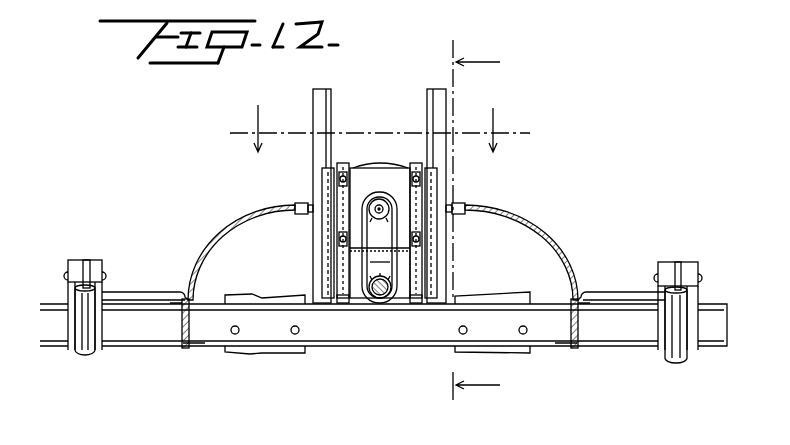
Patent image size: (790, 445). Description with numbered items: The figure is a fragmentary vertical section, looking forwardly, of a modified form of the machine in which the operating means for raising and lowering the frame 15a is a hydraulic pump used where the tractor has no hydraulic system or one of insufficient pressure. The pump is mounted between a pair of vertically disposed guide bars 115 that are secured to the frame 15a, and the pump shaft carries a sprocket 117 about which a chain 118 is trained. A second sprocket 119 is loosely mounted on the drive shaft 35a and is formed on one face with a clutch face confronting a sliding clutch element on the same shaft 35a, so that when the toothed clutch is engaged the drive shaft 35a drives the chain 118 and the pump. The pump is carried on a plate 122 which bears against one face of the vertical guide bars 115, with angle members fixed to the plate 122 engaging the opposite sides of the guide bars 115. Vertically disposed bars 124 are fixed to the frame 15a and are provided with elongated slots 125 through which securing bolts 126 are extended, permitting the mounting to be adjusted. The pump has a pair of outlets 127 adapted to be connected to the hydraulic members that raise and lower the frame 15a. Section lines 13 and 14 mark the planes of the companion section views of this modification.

The section line 13- 13 is at (487, 220).
The section line 14- 14 is at (380, 115).
The frame 15a is at (322, 331).
The drive shaft 35a is at (385, 303).
The guide bars 115 is at (320, 142).
The sprocket 117 is at (372, 193).
The chain 118 is at (398, 262).
The sprocket 119 is at (378, 303).
The plate 122 is at (397, 180).
The bars 124 is at (340, 196).
The elongated slots 125 is at (343, 172).
The securing bolts 126 is at (338, 243).
The outlets 127 is at (456, 216).